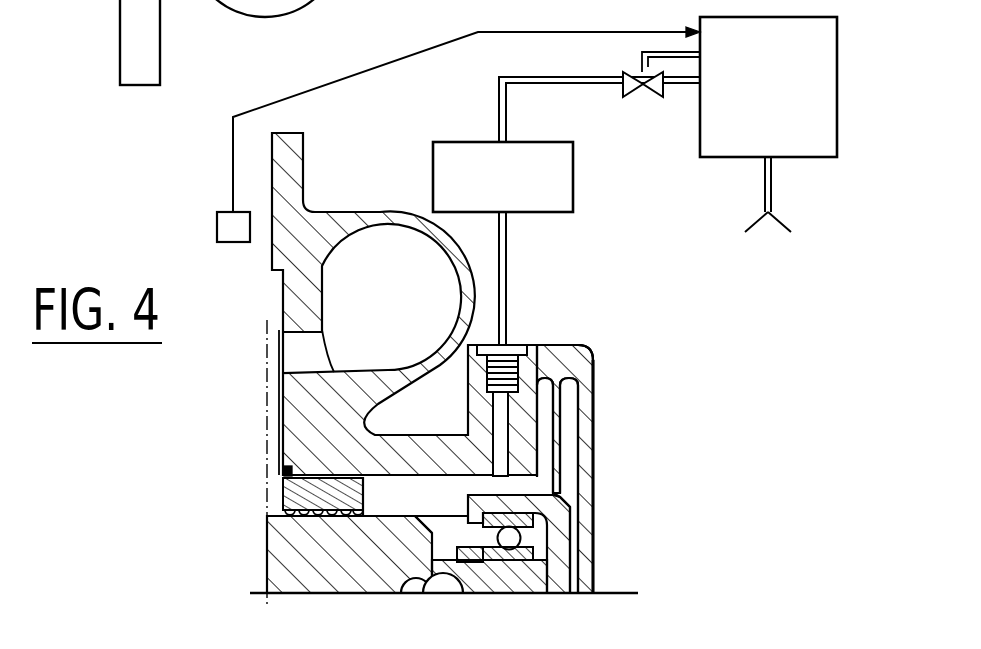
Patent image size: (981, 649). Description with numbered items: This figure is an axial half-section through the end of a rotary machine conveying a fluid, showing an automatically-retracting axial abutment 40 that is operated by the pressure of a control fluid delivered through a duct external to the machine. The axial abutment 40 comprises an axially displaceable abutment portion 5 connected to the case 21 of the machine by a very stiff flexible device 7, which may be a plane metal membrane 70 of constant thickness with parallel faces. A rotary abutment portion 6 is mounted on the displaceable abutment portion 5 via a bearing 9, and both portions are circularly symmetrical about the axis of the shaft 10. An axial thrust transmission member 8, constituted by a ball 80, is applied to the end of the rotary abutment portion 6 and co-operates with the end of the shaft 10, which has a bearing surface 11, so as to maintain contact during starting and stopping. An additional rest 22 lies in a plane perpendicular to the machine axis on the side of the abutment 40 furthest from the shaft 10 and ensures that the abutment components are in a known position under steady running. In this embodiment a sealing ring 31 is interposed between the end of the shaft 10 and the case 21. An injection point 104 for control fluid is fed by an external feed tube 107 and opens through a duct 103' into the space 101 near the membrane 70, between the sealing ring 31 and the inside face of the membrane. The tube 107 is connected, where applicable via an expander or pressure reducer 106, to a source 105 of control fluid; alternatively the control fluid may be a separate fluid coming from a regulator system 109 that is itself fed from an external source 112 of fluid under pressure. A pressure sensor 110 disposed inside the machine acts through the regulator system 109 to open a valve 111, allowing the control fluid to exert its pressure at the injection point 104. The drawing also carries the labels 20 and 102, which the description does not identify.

The displaceable abutment portion 5 is at (553, 538).
The rotary abutment portion 6 is at (520, 574).
The flexible device 7 is at (597, 398).
The axial thrust transmission member 8 is at (460, 583).
The bearing 9 is at (490, 543).
The shaft 10 is at (273, 556).
The bearing surface 11 is at (403, 590).
The body 20 is at (293, 400).
The case 21 is at (557, 350).
The additional rest 22 is at (580, 458).
The sealing ring 31 is at (283, 490).
The axial abutment 40 is at (570, 597).
The plane metal membrane 70 is at (580, 478).
The ball 80 is at (432, 587).
The space 101 is at (556, 393).
The annular groove 102 is at (574, 432).
The duct 103' is at (415, 496).
The injection point 104 is at (512, 346).
The source of control fluid 105 is at (507, 115).
The expander 106 is at (573, 190).
The external control fluid feed tube 107 is at (508, 248).
The regulator system 109 is at (803, 152).
The pressure sensor 110 is at (216, 231).
The valve 111 is at (649, 100).
The external source of fluid under pressure 112 is at (764, 191).